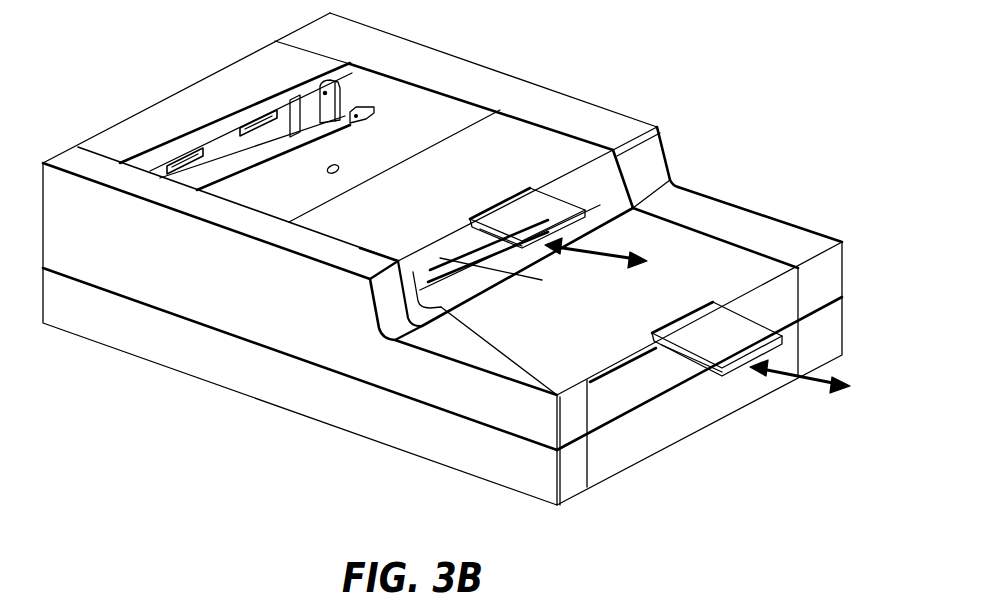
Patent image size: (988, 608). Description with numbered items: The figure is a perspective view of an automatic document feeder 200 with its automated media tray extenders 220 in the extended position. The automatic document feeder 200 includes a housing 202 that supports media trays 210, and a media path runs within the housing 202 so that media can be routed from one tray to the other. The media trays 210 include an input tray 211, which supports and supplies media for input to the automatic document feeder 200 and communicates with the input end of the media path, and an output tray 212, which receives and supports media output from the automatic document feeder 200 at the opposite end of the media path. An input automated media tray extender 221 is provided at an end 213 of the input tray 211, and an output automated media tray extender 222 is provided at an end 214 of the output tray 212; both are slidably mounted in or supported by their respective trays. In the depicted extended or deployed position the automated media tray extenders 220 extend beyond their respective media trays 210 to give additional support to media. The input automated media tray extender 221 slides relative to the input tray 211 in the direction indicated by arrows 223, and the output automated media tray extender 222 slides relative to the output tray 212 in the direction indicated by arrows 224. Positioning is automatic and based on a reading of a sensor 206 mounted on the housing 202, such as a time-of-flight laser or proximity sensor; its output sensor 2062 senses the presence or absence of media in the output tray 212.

The automatic document feeder 200 is at (132, 75).
The housing 202 is at (391, 43).
The sensor 206 is at (443, 96).
The output sensor 2062 is at (338, 167).
The media trays 210 is at (798, 84).
The input tray 211 is at (682, 250).
The output tray 212 is at (525, 140).
The end of input tray 213 is at (620, 393).
The end of output tray 214 is at (428, 258).
The automated media tray extenders 220 is at (800, 141).
The input automated media tray extender 221 is at (730, 332).
The output automated media tray extender 222 is at (537, 212).
The arrows 223 is at (833, 390).
The arrows 224 is at (630, 267).